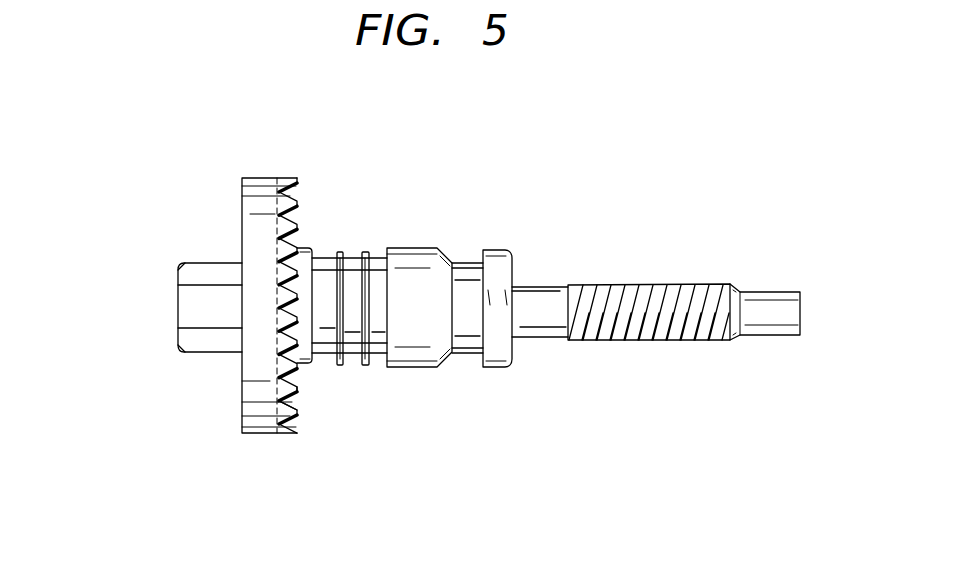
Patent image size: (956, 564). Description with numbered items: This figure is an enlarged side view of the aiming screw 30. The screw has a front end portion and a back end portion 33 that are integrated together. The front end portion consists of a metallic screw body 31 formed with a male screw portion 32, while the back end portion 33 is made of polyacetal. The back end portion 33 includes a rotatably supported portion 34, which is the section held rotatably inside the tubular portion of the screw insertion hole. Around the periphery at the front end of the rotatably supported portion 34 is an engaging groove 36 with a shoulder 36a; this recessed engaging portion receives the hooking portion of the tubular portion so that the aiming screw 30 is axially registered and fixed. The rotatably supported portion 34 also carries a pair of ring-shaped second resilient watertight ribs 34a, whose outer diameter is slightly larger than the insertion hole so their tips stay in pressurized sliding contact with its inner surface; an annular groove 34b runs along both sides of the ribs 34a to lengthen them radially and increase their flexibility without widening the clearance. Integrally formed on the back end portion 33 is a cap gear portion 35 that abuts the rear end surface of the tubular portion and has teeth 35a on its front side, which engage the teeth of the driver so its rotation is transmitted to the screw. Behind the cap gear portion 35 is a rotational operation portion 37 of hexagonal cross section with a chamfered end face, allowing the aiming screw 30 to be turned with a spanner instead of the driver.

The aiming screw 30 is at (463, 240).
The screw body 31 is at (746, 281).
The male screw portion 32 is at (643, 285).
The back end portion 33 is at (478, 110).
The rotatably supported portion 34 is at (437, 247).
The second resilient watertight ribs 34a is at (366, 251).
The annular groove 34b is at (322, 364).
The cap gear portion 35 is at (268, 177).
The teeth 35a is at (294, 403).
The engaging groove 36 is at (478, 256).
The shoulder 36a is at (471, 336).
The rotational operation portion 37 is at (180, 288).